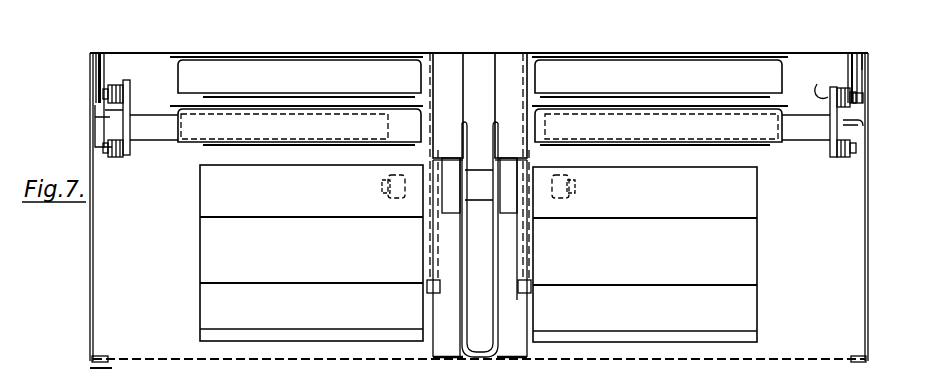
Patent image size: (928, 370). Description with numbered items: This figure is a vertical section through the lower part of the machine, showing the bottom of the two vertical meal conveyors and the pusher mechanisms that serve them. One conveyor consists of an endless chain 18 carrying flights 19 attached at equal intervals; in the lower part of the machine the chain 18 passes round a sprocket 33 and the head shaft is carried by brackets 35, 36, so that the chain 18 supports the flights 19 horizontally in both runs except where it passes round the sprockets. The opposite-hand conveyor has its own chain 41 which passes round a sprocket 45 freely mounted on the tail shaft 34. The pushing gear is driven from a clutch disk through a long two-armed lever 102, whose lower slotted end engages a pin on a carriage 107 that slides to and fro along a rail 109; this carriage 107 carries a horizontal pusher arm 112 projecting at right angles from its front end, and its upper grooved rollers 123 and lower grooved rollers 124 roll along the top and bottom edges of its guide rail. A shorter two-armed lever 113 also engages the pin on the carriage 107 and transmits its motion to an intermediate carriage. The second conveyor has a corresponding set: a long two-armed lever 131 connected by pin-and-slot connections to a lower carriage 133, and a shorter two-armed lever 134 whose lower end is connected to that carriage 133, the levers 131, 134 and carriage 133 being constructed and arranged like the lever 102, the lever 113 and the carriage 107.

The endless chain 18 is at (533, 268).
The flights 19 is at (757, 148).
The sprocket 33 is at (527, 253).
The tail shaft 34 is at (487, 190).
The bracket 35 is at (497, 320).
The bracket 36 is at (462, 303).
The chain 41 is at (423, 238).
The sprocket 45 is at (433, 262).
The long two-armed lever 102 is at (860, 80).
The carriage 107 is at (816, 80).
The rail 109 is at (850, 133).
The horizontal pusher arm 112 is at (813, 135).
The shorter two-armed lever 113 is at (863, 68).
The upper grooved rollers 123 is at (842, 105).
The lower grooved rollers 124 is at (840, 150).
The long two-armed lever 131 is at (106, 60).
The lower carriage 133 is at (130, 125).
The shorter two-armed lever 134 is at (106, 72).